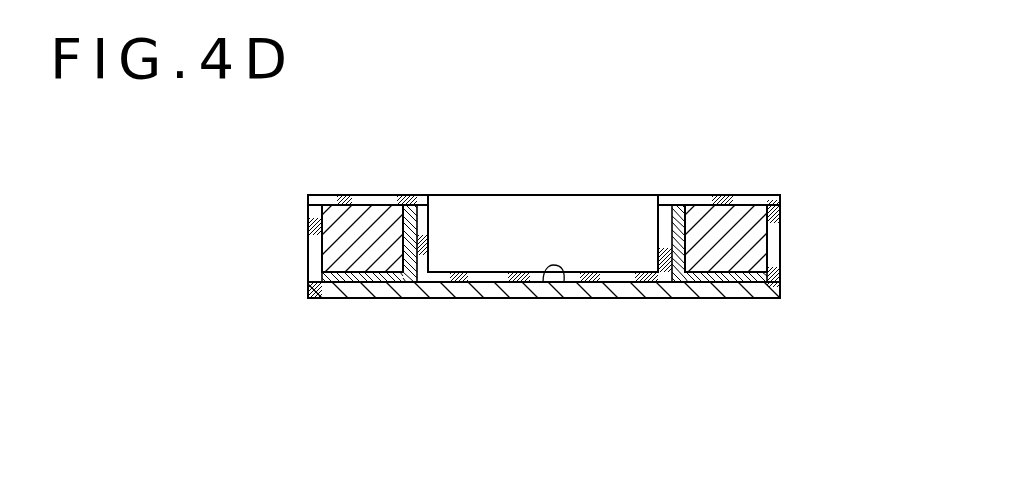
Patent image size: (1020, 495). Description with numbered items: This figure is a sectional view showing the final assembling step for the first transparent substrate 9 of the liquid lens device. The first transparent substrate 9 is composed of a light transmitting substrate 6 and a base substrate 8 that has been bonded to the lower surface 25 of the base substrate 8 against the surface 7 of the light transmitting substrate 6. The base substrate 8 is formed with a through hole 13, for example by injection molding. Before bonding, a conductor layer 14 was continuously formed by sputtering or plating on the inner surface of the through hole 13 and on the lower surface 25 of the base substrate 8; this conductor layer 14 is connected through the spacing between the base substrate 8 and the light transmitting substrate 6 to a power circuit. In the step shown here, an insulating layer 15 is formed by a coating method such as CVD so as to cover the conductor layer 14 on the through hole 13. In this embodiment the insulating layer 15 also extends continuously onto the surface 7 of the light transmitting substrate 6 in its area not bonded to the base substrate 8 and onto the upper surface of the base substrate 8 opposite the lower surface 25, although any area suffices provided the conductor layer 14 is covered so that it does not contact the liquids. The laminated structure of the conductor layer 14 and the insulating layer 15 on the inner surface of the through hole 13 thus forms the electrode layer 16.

The light transmitting substrate 6 is at (515, 298).
The surface 7 is at (564, 282).
The base substrate 8 is at (750, 210).
The first transparent substrate 9 is at (714, 157).
The through hole 13 is at (410, 232).
The conductor layer 14 is at (672, 280).
The insulating layer 15 is at (388, 195).
The electrode layer 16 is at (651, 212).
The lower surface 25 is at (729, 276).